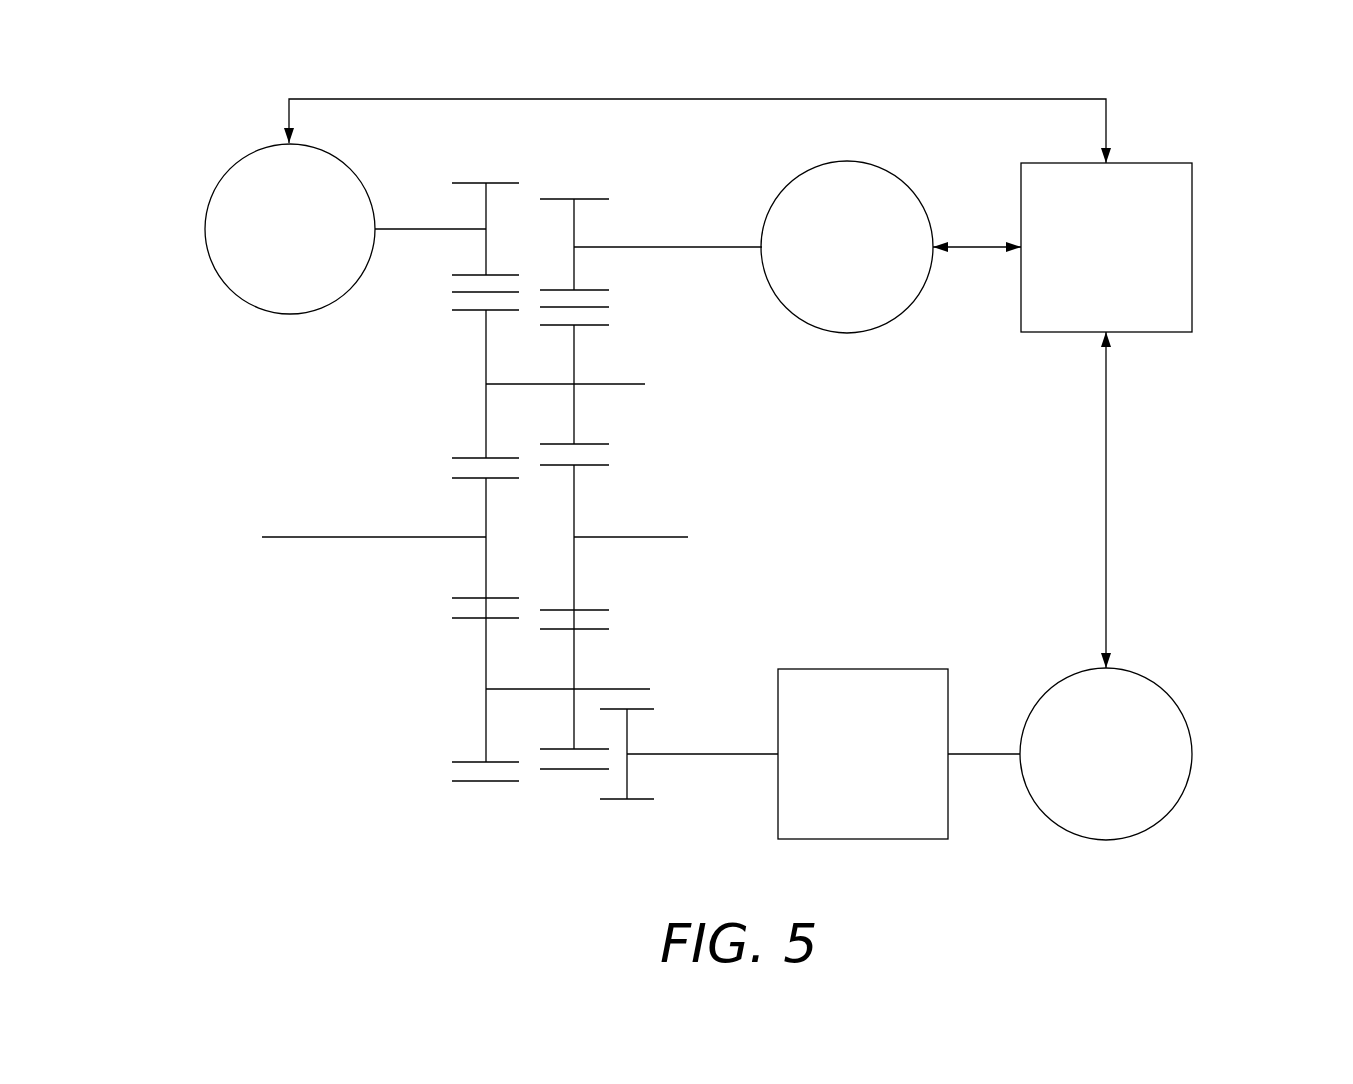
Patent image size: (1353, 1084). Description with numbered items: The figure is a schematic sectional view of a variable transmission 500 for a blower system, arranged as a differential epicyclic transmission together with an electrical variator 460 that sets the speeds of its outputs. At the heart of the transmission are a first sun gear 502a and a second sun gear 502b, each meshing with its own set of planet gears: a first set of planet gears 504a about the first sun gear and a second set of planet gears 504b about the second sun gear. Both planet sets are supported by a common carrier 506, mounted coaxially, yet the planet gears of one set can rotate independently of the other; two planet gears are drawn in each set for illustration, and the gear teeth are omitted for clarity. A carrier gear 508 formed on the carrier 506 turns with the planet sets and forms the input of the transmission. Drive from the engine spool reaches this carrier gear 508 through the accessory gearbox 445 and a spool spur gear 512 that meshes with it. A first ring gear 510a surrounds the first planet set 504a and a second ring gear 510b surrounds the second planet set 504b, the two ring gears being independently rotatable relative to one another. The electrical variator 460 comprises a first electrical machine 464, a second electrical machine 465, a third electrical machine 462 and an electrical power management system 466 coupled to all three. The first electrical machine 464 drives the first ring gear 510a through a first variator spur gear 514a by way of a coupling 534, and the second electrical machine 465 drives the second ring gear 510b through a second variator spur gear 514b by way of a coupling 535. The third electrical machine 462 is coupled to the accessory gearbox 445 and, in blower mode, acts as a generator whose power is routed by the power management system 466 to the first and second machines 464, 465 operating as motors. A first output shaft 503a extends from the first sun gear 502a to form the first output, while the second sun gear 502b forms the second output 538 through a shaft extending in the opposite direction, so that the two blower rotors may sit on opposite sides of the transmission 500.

The variable transmission 500 is at (252, 59).
The electrical variator 460 is at (1228, 365).
The third electrical machine 462 is at (1140, 673).
The first electrical machine 464 is at (845, 161).
The second electrical machine 465 is at (205, 227).
The electrical power management system 466 is at (1087, 259).
The accessory gearbox 445 is at (843, 766).
The first sun gear 502a is at (575, 578).
The second sun gear 502b is at (486, 570).
The first output shaft 503a is at (660, 537).
The first set of planet gears 504a is at (575, 347).
The second set of planet gears 504b is at (486, 410).
The carrier 506 is at (623, 384).
The carrier gear 508 is at (650, 689).
The first ring gear 510a is at (557, 769).
The second ring gear 510b is at (467, 781).
The spool spur gear 512 is at (637, 799).
The first variator spur gear 514a is at (553, 199).
The second variator spur gear 514b is at (466, 183).
The shaft to electric machine 534 is at (660, 247).
The shaft to electric machine 535 is at (400, 232).
The second output 538 is at (320, 537).